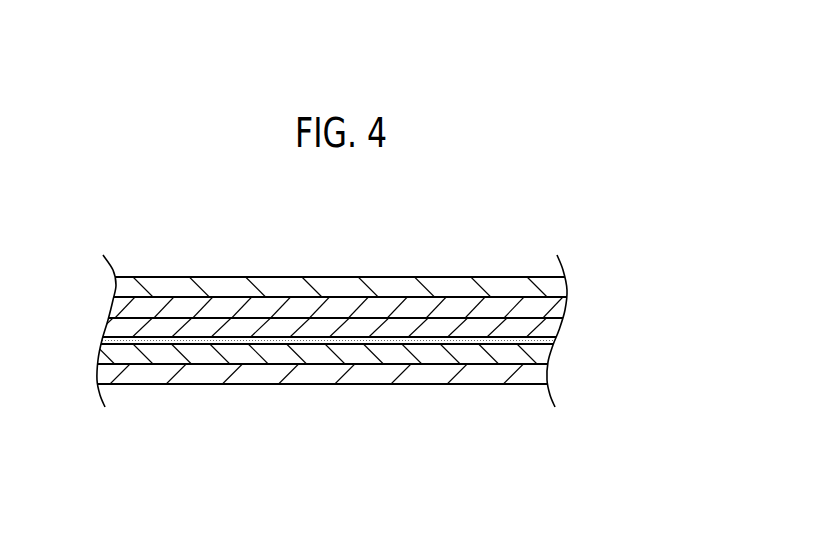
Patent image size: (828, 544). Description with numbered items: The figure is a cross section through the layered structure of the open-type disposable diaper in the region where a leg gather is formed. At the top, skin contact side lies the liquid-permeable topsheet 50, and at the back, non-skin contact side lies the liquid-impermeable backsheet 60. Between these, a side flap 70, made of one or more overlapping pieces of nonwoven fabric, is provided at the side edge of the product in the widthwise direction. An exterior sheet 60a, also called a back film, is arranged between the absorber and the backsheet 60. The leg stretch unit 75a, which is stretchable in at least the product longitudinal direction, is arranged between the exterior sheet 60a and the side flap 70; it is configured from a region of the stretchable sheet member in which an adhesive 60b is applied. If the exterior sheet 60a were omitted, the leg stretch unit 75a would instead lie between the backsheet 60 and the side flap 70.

The topsheet 50 is at (273, 286).
The side flap 70 is at (347, 315).
The leg stretch unit 75a is at (433, 328).
The backsheet 60 is at (268, 373).
The exterior sheet 60a is at (433, 357).
The adhesive 60b is at (352, 340).